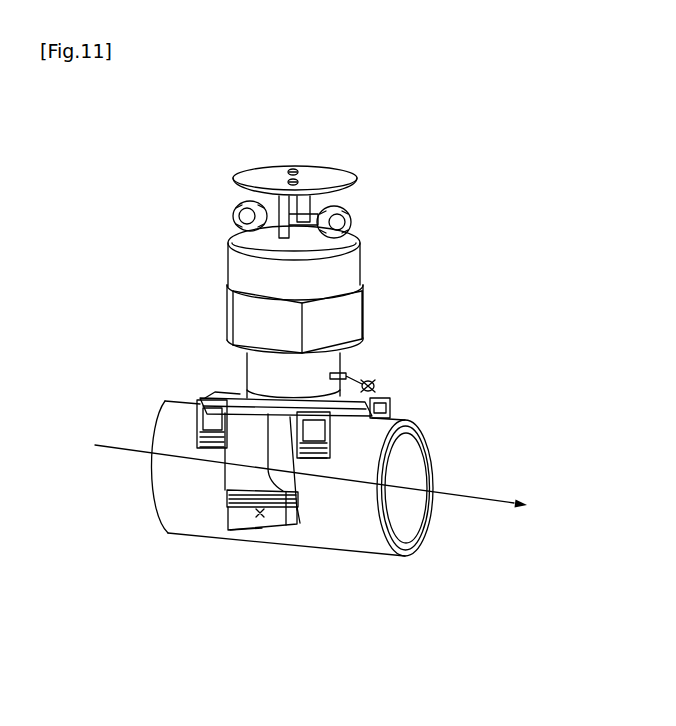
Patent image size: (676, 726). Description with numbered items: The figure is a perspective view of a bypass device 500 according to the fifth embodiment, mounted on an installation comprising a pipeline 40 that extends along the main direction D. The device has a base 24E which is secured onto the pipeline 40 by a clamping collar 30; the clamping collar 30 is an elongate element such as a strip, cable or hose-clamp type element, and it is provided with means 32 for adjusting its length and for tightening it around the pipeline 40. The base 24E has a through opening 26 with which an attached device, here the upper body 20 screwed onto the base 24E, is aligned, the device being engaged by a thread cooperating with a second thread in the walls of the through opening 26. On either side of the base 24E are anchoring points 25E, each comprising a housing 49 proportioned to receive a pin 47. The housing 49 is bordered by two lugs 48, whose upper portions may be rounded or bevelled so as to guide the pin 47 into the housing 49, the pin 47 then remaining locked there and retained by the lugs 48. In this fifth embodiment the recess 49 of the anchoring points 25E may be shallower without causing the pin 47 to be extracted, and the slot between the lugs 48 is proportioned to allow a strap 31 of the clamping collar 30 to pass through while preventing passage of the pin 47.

The bypass device 500 is at (322, 133).
The actuator body 20 is at (350, 266).
The through opening 26 is at (328, 377).
The base 24E is at (370, 386).
The anchoring points 25E is at (227, 387).
The lugs 48 is at (210, 403).
The pin 47 is at (345, 411).
The pipeline 40 is at (433, 468).
The clamping collar 30 is at (210, 477).
The means for adjusting the length and tightening 32 is at (230, 517).
The housing 49 is at (287, 525).
The strap 31 is at (262, 540).